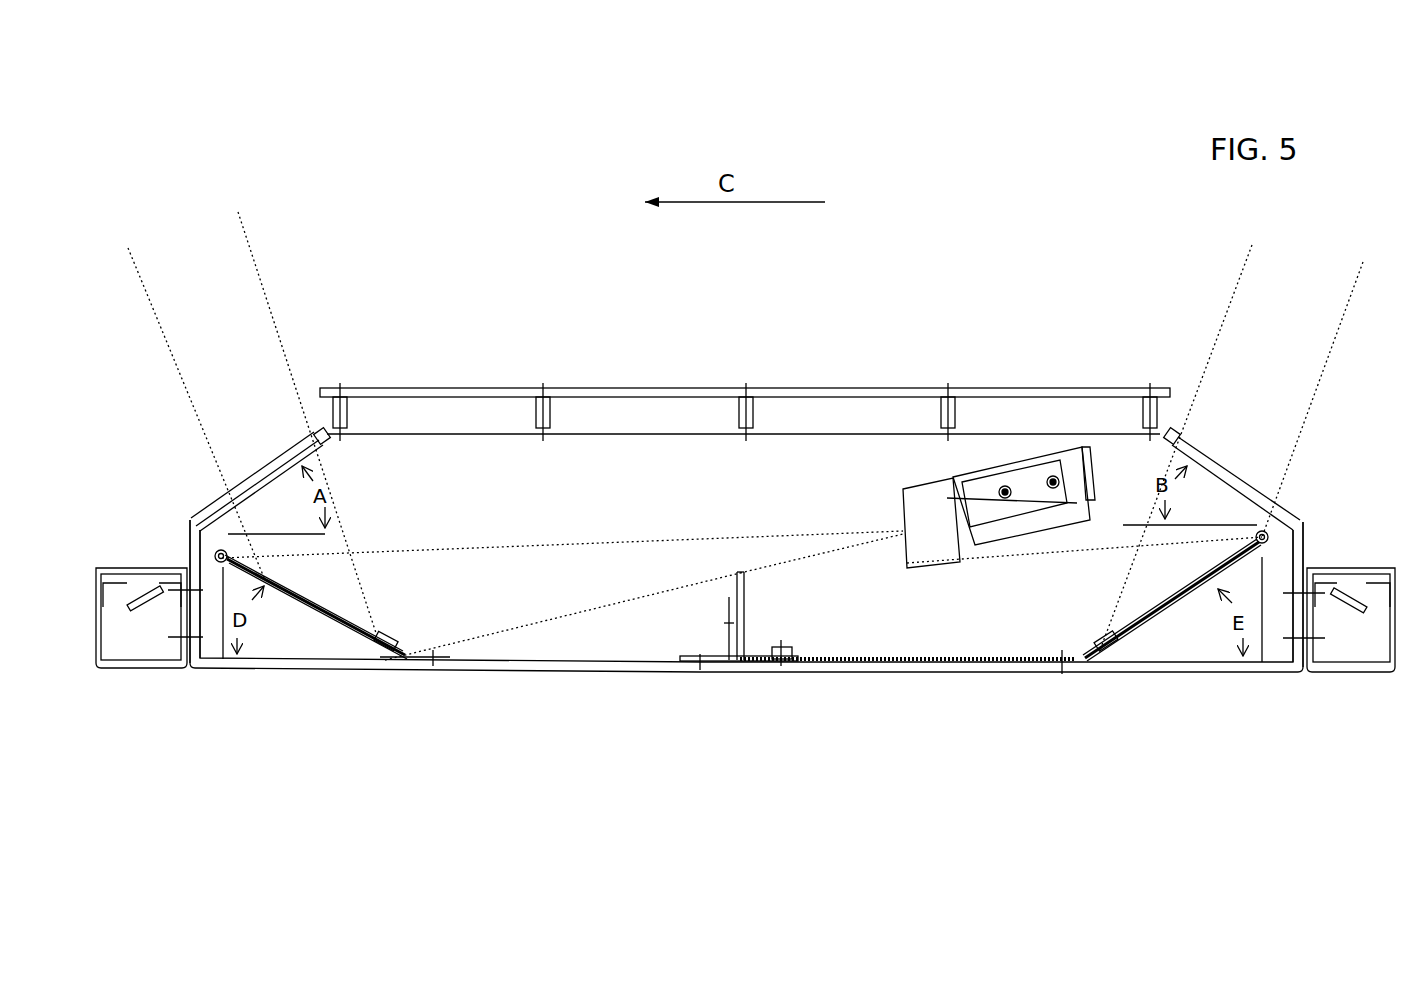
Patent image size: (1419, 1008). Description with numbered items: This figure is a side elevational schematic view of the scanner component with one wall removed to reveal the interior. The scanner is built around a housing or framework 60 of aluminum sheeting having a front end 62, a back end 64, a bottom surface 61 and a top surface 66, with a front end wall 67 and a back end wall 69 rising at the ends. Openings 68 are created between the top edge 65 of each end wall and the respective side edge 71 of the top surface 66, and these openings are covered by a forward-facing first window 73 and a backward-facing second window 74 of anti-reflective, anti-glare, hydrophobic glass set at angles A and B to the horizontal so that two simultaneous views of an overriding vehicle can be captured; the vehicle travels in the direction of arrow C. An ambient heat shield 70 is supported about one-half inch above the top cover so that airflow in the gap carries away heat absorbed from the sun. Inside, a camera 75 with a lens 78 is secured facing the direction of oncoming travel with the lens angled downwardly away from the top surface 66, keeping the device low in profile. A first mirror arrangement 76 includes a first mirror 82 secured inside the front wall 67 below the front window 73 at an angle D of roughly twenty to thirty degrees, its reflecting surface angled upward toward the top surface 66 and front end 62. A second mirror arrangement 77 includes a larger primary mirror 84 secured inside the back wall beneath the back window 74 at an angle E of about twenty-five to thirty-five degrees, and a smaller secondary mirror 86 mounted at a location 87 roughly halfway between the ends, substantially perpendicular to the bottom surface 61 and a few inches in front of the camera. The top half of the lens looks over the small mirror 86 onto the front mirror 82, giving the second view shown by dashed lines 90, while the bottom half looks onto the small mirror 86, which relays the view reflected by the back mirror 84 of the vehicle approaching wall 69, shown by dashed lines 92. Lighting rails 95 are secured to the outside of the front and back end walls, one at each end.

The housing or framework 60 is at (612, 673).
The framework bottom surface 61 is at (558, 657).
The front end 62 is at (226, 686).
The back end 64 is at (1279, 689).
The top edge 65 is at (188, 522).
The top surface 66 is at (690, 437).
The front end wall 67 is at (188, 560).
The openings 68 is at (237, 385).
The back end wall 69 is at (1307, 548).
The ambient heat shield 70 is at (745, 394).
The side edge 71 is at (1183, 375).
The first window 73 is at (246, 483).
The second window 74 is at (1222, 472).
The camera 75 is at (973, 446).
The first mirror arrangement 76 is at (356, 546).
The second mirror arrangement 77 is at (1062, 657).
The lens 78 is at (905, 497).
The first mirror 82 is at (343, 643).
The primary mirror 84 is at (1150, 638).
The secondary mirror 86 is at (735, 585).
The location 87 is at (727, 690).
The dashed lines 90 is at (530, 551).
The dashed lines 92 is at (1047, 554).
The lighting rails 95 is at (140, 608).